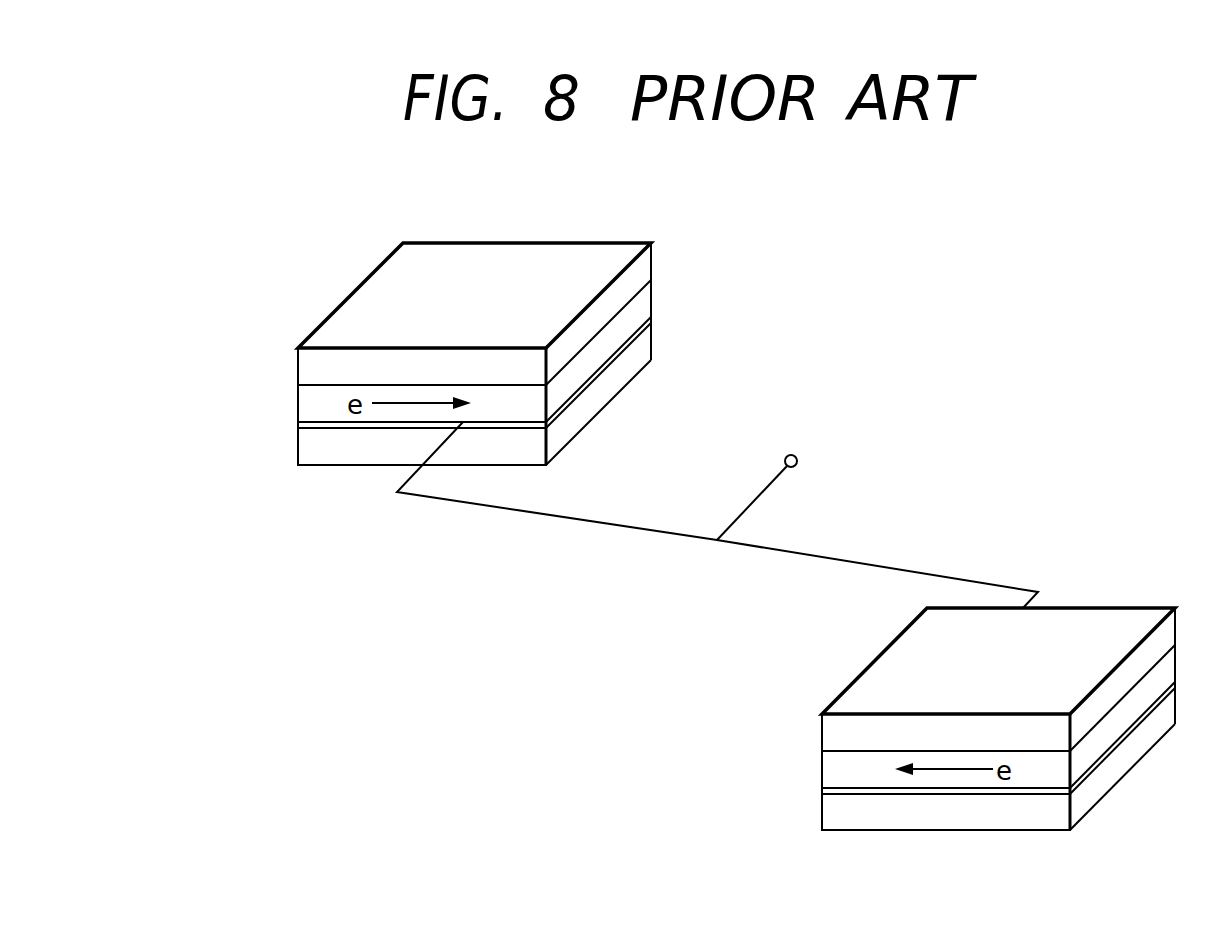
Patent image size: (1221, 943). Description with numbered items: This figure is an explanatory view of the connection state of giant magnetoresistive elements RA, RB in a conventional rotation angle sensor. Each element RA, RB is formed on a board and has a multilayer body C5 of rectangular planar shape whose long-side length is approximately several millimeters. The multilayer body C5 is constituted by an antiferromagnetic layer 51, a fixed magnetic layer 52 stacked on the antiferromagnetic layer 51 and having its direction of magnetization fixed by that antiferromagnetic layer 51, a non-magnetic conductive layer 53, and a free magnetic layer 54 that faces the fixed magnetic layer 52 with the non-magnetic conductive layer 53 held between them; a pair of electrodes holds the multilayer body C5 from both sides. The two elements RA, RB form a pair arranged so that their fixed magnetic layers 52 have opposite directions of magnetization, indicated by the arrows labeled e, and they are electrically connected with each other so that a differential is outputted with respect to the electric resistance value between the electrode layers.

The giant magnetoresistive element RA is at (383, 245).
The giant magnetoresistive element RB is at (1142, 596).
The multilayer body C5 is at (223, 343).
The antiferromagnetic layer 51 is at (316, 364).
The fixed magnetic layer 52 is at (316, 396).
The non-magnetic conductive layer 53 is at (319, 425).
The free magnetic layer 54 is at (316, 453).